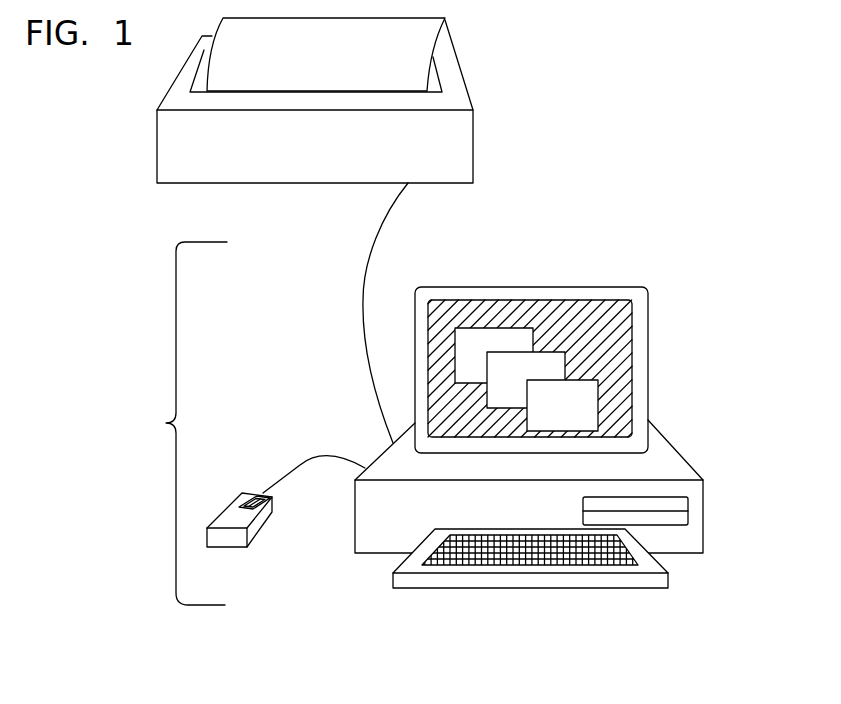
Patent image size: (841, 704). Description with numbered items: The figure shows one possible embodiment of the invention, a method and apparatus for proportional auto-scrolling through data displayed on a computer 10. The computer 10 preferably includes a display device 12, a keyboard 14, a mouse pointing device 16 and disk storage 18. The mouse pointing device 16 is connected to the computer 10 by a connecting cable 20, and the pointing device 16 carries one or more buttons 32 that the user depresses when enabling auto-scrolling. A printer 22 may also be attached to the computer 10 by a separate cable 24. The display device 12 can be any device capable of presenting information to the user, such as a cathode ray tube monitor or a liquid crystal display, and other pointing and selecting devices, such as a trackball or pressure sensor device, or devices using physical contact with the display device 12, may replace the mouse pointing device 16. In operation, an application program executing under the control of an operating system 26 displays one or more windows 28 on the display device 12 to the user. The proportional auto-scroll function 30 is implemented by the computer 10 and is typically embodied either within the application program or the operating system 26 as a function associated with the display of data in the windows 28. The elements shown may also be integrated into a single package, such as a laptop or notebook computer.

The computer 10 is at (163, 423).
The display device 12 is at (523, 288).
The keyboard 14 is at (553, 585).
The mouse pointing device 16 is at (228, 540).
The disk storage 18 is at (673, 515).
The connecting cable 20 is at (297, 462).
The printer 22 is at (180, 155).
The cable 24 is at (363, 287).
The operating system 26 is at (610, 310).
The windows 28 is at (585, 382).
The proportional auto-scroll function 30 is at (625, 412).
The buttons 32 is at (260, 507).